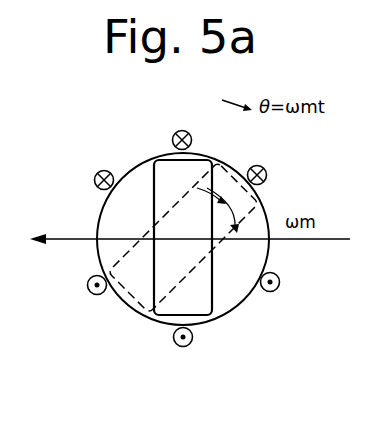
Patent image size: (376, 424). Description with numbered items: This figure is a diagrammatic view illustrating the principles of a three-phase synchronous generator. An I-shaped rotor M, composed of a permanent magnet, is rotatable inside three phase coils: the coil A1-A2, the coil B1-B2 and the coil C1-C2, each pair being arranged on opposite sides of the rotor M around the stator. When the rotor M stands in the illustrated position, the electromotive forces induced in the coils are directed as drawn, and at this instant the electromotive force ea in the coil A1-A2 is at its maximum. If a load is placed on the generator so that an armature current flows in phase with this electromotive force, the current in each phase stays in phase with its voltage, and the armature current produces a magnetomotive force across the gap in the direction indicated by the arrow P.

The phase coil A1 is at (186, 129).
The phase coil A2 is at (184, 353).
The phase coil B1 is at (284, 294).
The phase coil B2 is at (91, 171).
The phase coil C1 is at (88, 295).
The phase coil C2 is at (272, 168).
The I-shaped rotor M is at (202, 280).
The arrow P is at (63, 240).